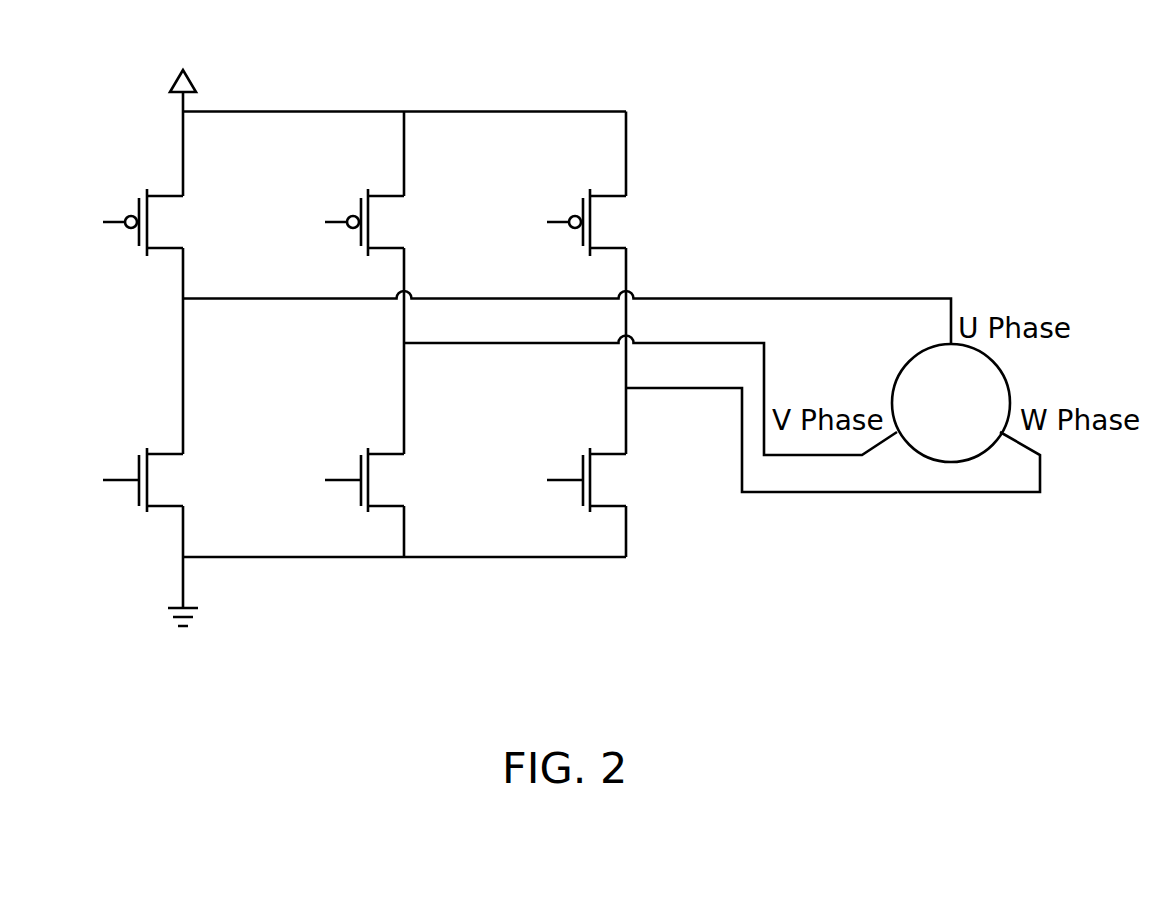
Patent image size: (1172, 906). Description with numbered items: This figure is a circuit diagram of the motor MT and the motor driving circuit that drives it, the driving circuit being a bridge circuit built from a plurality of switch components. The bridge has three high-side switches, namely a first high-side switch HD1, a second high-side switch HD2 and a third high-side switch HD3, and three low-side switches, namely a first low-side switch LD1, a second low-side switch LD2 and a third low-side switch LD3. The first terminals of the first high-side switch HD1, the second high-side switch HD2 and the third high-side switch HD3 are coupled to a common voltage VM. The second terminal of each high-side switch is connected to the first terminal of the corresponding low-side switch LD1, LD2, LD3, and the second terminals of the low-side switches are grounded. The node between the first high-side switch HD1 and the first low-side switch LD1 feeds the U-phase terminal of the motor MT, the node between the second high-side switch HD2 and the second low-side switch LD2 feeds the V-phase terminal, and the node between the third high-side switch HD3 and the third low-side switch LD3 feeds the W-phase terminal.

The common voltage VM is at (391, 114).
The first high-side switch HD1 is at (143, 206).
The second high-side switch HD2 is at (364, 206).
The third high-side switch HD3 is at (586, 206).
The first low-side switch LD1 is at (143, 463).
The second low-side switch LD2 is at (364, 463).
The third low-side switch LD3 is at (586, 463).
The motor MT is at (993, 383).